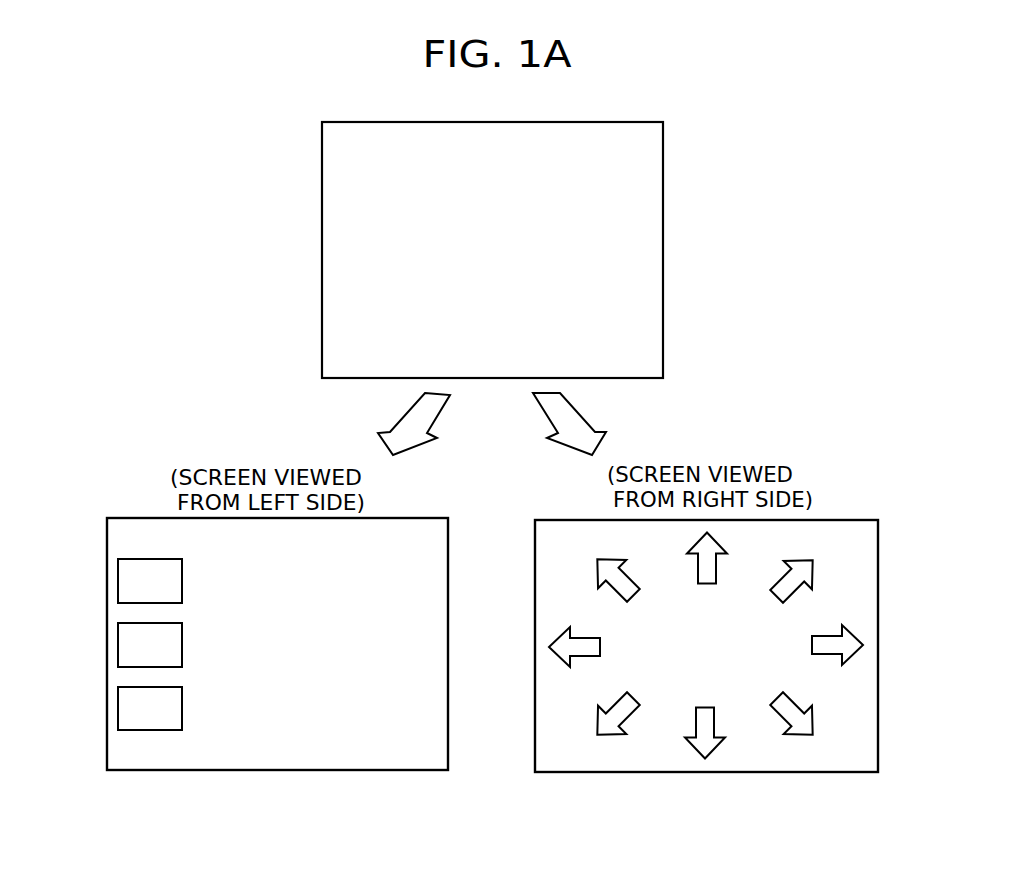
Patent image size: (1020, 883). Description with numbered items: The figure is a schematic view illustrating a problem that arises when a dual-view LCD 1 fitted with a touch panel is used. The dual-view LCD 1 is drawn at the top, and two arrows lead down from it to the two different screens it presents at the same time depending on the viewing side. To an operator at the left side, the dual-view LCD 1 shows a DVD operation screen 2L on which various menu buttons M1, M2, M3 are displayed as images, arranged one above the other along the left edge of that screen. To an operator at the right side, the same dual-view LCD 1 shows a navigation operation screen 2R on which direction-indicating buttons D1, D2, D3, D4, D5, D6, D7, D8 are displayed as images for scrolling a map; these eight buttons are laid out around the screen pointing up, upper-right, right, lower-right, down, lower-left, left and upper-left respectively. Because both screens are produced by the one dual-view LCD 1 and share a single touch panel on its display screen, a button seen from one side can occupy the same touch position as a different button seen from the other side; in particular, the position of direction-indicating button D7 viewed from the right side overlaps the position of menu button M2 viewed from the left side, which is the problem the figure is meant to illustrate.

The dual-view LCD 1 is at (663, 180).
The DVD operation screen 2L is at (247, 685).
The navigation operation screen 2R is at (706, 686).
The menu button M1 is at (120, 578).
The menu button M2 is at (120, 645).
The menu button M3 is at (120, 711).
The direction-indicating button D1 is at (722, 548).
The direction-indicating button D2 is at (817, 573).
The direction-indicating button D3 is at (855, 633).
The direction-indicating button D4 is at (817, 717).
The direction-indicating button D5 is at (718, 752).
The direction-indicating button D6 is at (608, 735).
The direction-indicating button D7 is at (560, 660).
The direction-indicating button D8 is at (598, 572).